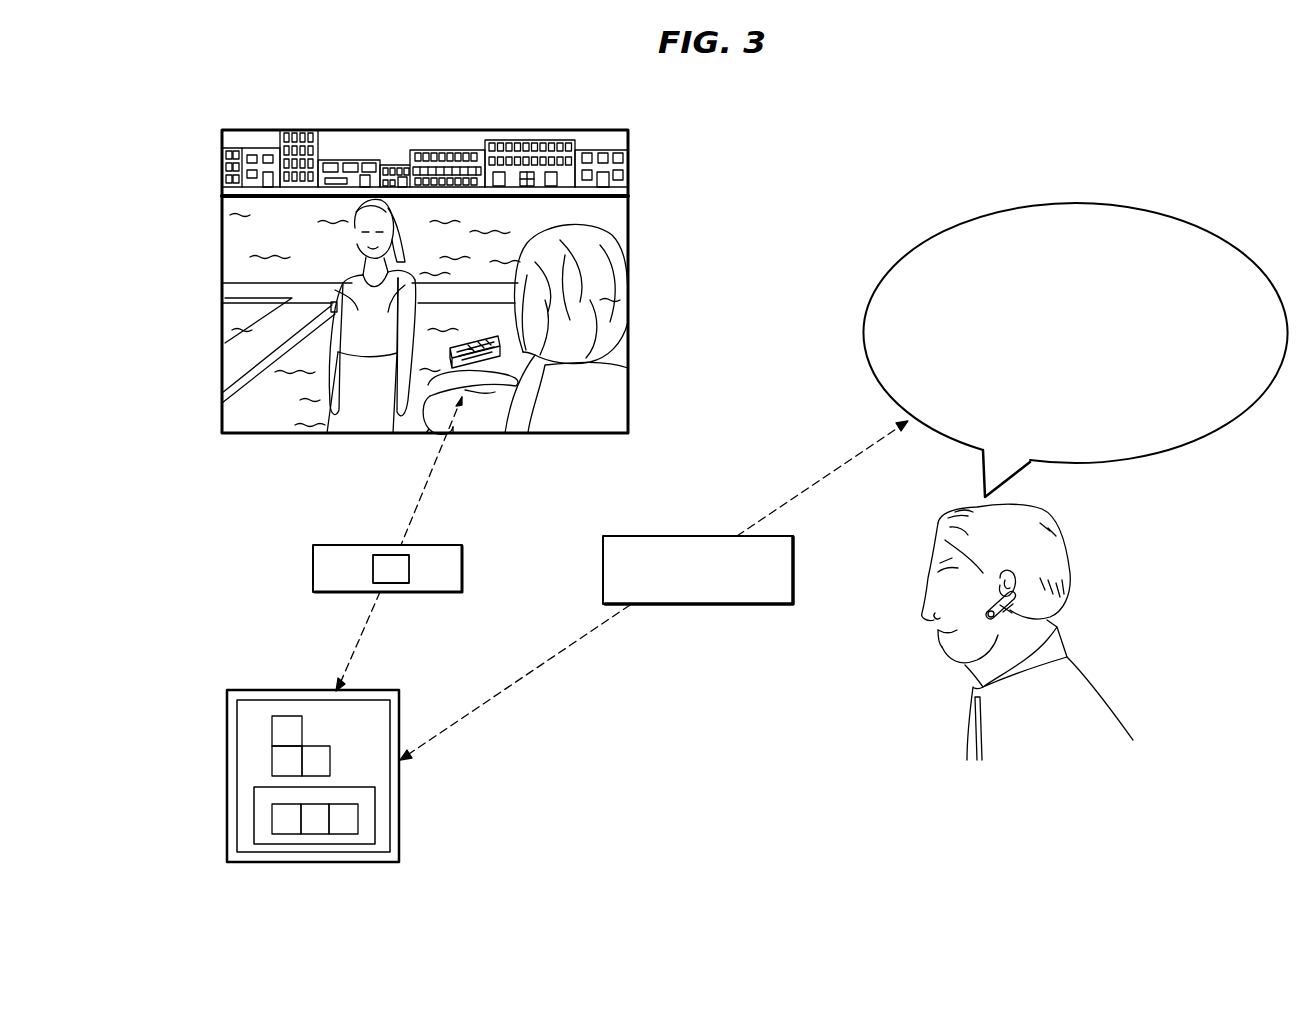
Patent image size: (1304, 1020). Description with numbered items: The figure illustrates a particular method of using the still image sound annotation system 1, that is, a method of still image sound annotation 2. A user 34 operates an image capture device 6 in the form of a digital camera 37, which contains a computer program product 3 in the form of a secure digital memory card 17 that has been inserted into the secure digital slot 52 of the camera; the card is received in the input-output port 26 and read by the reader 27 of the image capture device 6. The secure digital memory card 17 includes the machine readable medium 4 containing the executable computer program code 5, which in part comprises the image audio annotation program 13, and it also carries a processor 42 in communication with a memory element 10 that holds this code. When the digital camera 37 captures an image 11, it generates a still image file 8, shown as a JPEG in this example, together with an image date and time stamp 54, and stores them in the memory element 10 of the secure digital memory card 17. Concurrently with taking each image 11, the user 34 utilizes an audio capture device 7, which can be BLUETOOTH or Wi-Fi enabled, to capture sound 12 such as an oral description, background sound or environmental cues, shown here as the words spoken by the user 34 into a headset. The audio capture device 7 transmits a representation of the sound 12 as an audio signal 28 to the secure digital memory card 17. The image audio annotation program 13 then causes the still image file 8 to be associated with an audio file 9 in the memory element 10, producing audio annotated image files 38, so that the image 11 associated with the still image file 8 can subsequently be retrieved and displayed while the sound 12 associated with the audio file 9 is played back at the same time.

The still image sound annotation system 1 is at (720, 479).
The method of still image sound annotation 2 is at (1071, 115).
The computer program product 3 is at (307, 776).
The secure digital memory card 17 is at (307, 776).
The machine readable medium 4 is at (345, 776).
The computer program code 5 is at (287, 761).
The image capture device 6 is at (511, 380).
The digital camera 37 is at (511, 380).
The audio capture device 7 is at (1043, 620).
The still image file 8 is at (367, 689).
The image 11 is at (387, 568).
The audio file 9 is at (343, 819).
The memory element 10 is at (358, 815).
The sound 12 is at (1219, 229).
The image audio annotation program 13 is at (316, 761).
The input-output port 26 is at (511, 380).
The reader 27 is at (511, 380).
The secure digital slot 52 is at (477, 345).
The audio signal 28 is at (698, 570).
The user 34 is at (781, 492).
The audio annotated image files 38 is at (315, 819).
The processor 42 is at (287, 731).
The image date and time stamp 54 is at (391, 569).